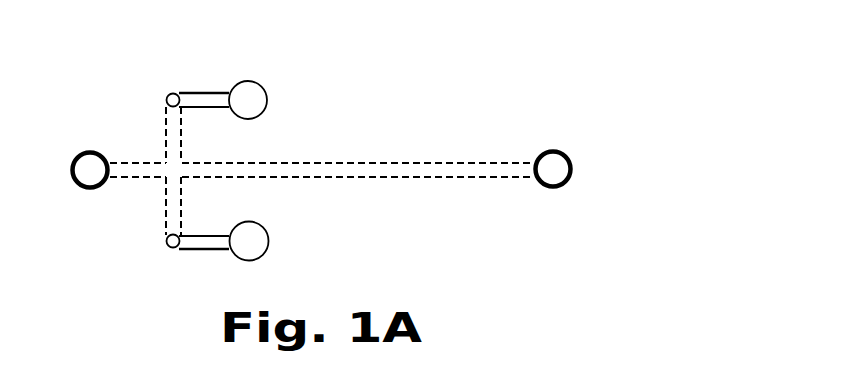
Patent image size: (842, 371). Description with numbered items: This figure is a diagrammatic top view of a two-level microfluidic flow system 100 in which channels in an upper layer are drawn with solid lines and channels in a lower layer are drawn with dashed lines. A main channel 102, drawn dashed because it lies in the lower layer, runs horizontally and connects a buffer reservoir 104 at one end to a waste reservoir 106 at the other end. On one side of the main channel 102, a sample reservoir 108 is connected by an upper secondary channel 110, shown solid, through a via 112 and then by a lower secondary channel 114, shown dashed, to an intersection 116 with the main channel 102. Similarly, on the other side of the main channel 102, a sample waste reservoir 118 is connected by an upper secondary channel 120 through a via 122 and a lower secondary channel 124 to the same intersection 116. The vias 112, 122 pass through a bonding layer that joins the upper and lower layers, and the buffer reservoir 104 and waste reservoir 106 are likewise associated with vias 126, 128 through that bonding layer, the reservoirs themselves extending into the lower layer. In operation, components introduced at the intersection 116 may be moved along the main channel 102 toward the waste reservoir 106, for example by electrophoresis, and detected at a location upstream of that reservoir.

The flow system 100 is at (428, 60).
The main channel 102 is at (377, 165).
The buffer reservoir 104 is at (77, 160).
The waste reservoir 106 is at (560, 152).
The sample reservoir 108 is at (258, 88).
The upper secondary channel 110 is at (203, 93).
The via 112 is at (168, 95).
The lower secondary channel 114 is at (167, 130).
The intersection 116 is at (178, 168).
The sample waste reservoir 118 is at (257, 250).
The upper secondary channel 120 is at (209, 247).
The via 122 is at (170, 245).
The lower secondary channel 124 is at (168, 205).
The via 126 is at (64, 170).
The via 128 is at (578, 171).